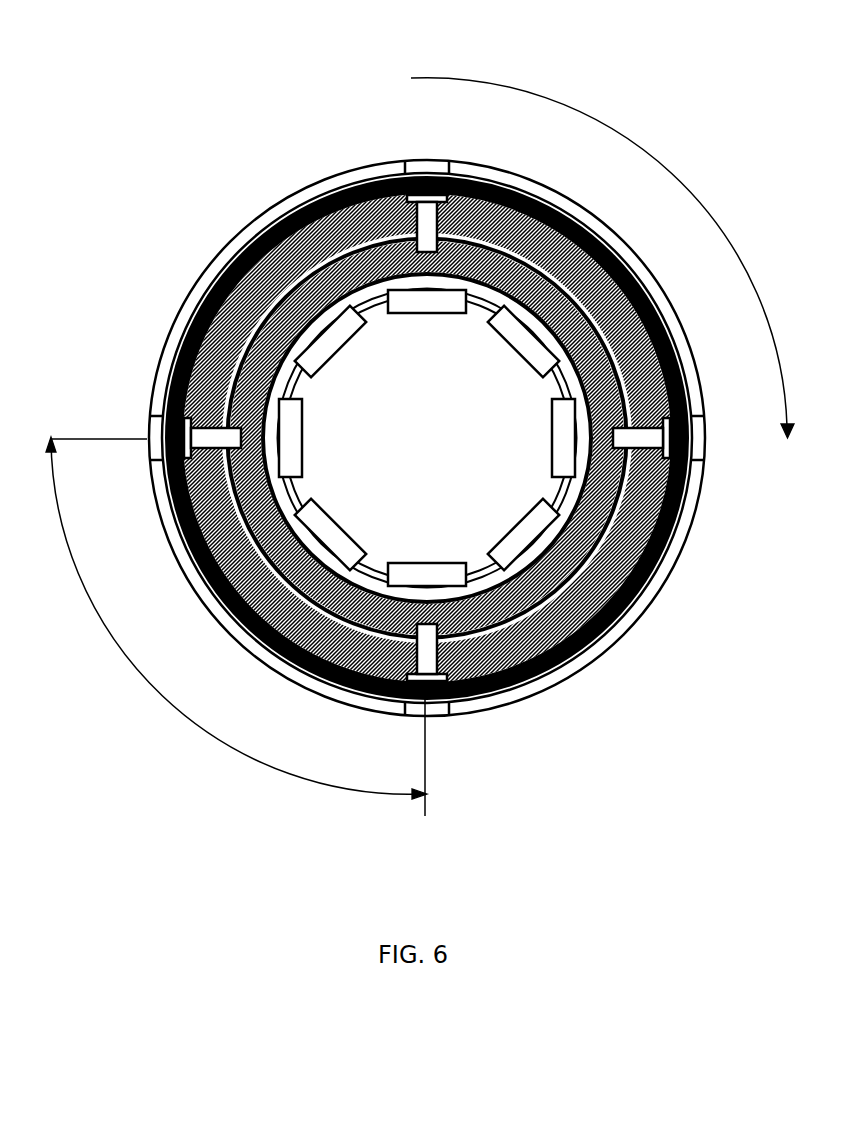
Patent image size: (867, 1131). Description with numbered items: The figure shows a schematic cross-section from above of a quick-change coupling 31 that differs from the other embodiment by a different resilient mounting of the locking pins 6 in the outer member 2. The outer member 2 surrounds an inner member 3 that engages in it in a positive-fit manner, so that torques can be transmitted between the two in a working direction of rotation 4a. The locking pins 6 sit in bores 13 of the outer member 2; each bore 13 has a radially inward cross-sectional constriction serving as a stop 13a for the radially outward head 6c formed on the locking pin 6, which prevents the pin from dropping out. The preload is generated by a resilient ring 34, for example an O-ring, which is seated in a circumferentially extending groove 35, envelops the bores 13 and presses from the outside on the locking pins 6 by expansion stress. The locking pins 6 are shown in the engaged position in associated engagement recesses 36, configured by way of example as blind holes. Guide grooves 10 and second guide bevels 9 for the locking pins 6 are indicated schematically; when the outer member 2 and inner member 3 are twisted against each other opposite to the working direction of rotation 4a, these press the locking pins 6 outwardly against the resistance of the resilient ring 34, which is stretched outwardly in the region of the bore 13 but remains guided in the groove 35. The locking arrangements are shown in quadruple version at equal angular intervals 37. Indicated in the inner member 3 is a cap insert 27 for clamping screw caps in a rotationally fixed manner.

The quick-change coupling 31 is at (170, 74).
The guide grooves 10 is at (351, 222).
The second guide bevels 9 is at (394, 224).
The working direction of rotation 4a is at (602, 258).
The stops 13a is at (160, 384).
The bores 13 is at (708, 440).
The inner member 3 is at (293, 320).
The cap insert 27 is at (312, 488).
The engagement recesses 36 is at (404, 616).
The outer member 2 is at (558, 590).
The resilient ring 34 is at (666, 547).
The circumferentially extending groove 35 is at (612, 622).
The locking pins 6 is at (426, 656).
The heads 6c is at (415, 680).
The equal angular intervals 37 is at (168, 701).